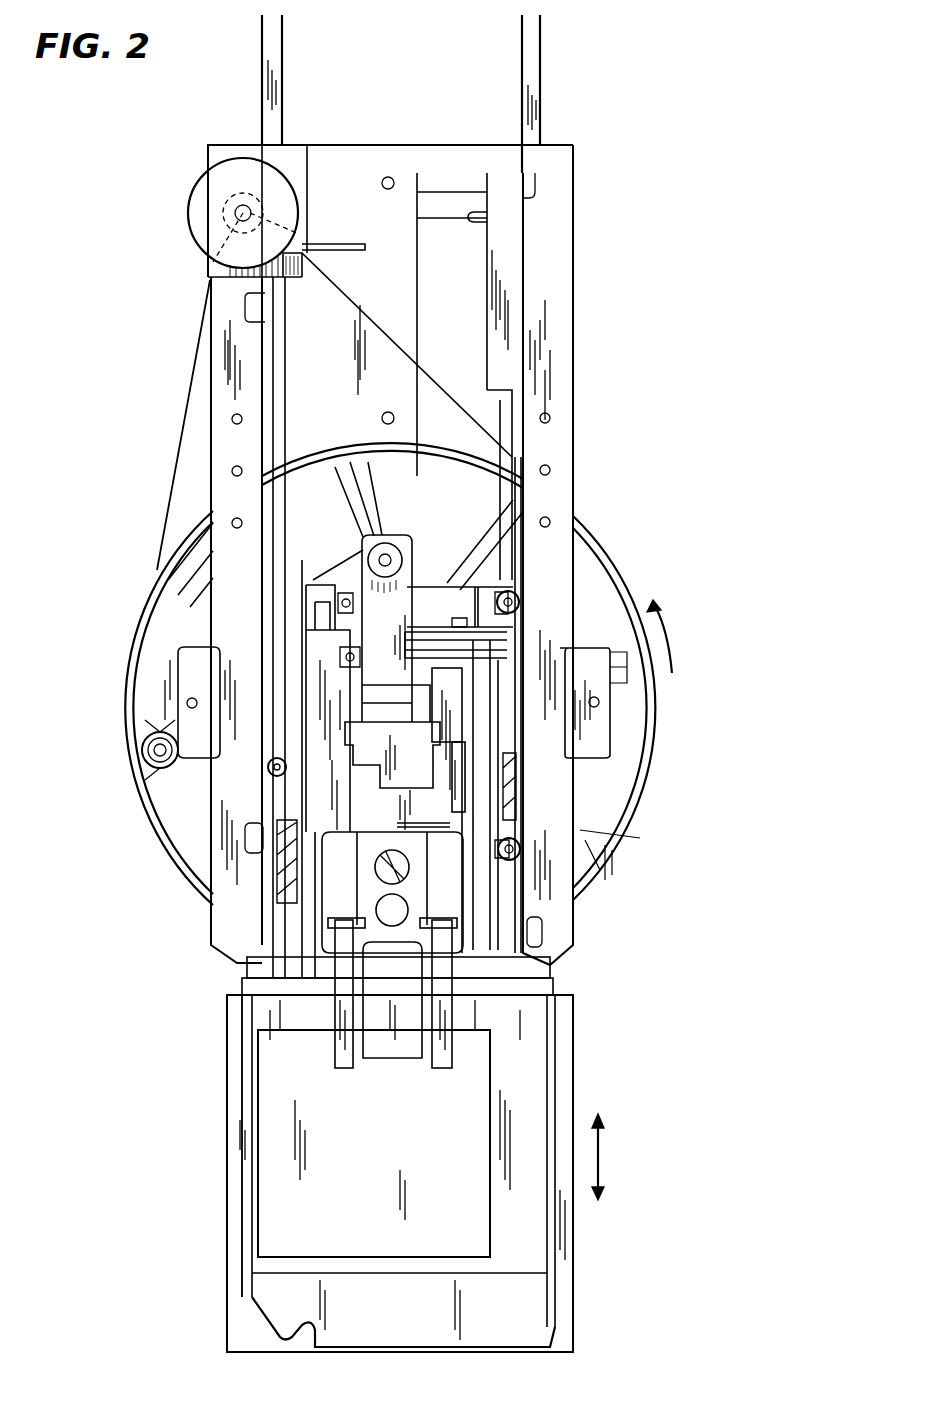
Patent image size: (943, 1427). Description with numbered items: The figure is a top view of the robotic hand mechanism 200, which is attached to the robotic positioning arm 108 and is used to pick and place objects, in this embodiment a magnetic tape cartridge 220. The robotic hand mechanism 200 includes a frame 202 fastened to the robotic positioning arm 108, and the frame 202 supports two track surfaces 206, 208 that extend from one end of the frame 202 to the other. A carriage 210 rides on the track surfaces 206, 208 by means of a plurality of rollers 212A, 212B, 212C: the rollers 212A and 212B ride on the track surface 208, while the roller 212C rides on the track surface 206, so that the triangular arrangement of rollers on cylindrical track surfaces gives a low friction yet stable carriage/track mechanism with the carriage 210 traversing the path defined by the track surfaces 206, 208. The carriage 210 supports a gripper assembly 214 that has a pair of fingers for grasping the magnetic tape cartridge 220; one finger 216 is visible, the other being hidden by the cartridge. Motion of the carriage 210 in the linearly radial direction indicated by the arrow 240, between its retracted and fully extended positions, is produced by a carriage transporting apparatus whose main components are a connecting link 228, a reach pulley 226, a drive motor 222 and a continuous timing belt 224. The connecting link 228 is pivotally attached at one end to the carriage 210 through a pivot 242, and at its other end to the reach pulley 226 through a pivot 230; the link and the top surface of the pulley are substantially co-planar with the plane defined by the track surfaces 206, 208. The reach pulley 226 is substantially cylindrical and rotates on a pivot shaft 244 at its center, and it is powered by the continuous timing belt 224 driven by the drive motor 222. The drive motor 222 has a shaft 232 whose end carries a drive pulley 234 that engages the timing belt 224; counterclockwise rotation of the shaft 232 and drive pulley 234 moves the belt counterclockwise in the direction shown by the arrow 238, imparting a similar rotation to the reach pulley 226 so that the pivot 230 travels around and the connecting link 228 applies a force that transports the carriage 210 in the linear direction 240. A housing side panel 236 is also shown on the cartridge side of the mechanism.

The robotic positioning arm 108 is at (500, 75).
The robotic hand mechanism 200 is at (72, 1063).
The frame 202 is at (547, 295).
The track surface 206 is at (265, 393).
The track surface 208 is at (500, 407).
The carriage 210 is at (453, 827).
The roller 212A is at (520, 603).
The roller 212B is at (525, 845).
The roller 212C is at (266, 770).
The gripper assembly 214 is at (337, 895).
The finger 216 is at (382, 1043).
The magnetic tape cartridge 220 is at (525, 1045).
The drive motor 222 is at (190, 240).
The continuous timing belt 224 is at (212, 362).
The reach pulley 226 is at (177, 653).
The connecting link 228 is at (177, 712).
The pivot 230 is at (160, 752).
The shaft 232 is at (262, 210).
The drive pulley 234 is at (298, 215).
The housing side panel 236 is at (232, 1137).
The arrow indicating direction of rotation 238 is at (705, 632).
The arrow indicating linear direction 240 is at (658, 1161).
The pivot 242 is at (388, 550).
The pivot shaft 244 is at (380, 670).